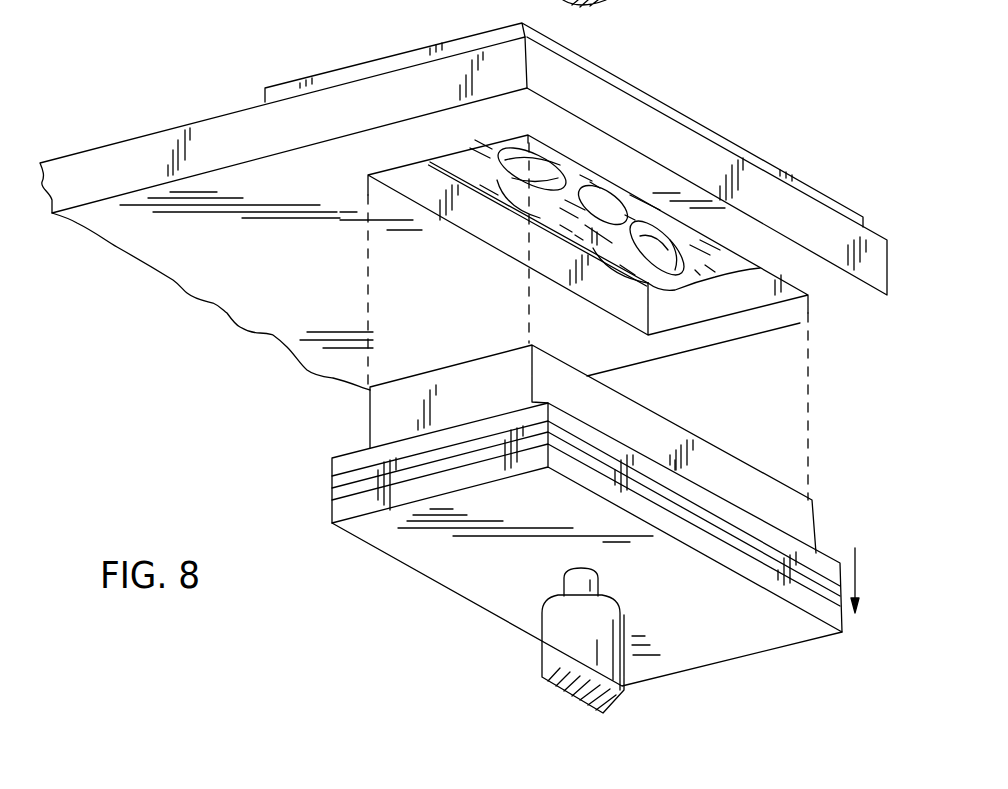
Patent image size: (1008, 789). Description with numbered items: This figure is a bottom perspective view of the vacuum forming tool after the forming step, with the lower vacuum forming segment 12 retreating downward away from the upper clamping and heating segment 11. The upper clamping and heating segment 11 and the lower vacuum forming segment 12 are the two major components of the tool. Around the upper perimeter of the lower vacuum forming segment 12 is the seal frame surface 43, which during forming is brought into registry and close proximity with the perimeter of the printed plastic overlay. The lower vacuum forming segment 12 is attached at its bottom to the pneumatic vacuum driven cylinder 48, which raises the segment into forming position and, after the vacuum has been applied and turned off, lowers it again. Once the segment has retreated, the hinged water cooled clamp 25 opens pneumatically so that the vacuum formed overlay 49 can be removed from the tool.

The upper clamping and heating segment 11 is at (752, 155).
The hinged water cooled clamp 25 is at (657, 109).
The vacuum formed overlay 49 is at (643, 210).
The seal frame surface 43 is at (688, 434).
The lower vacuum forming segment 12 is at (333, 478).
The pneumatic vacuum driven cylinder 48 is at (547, 653).